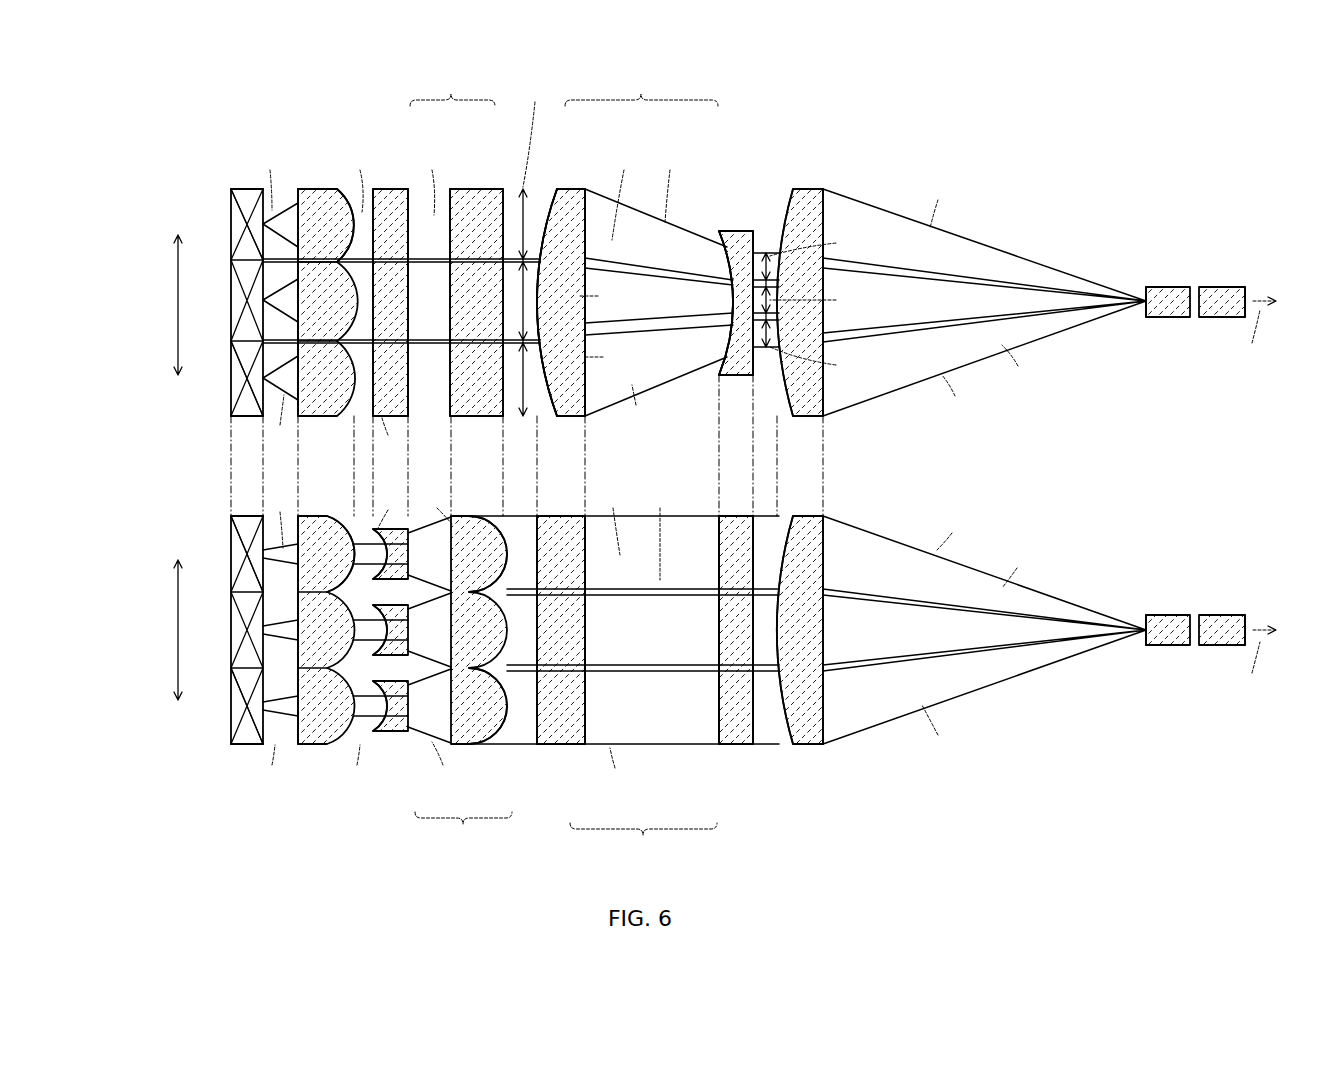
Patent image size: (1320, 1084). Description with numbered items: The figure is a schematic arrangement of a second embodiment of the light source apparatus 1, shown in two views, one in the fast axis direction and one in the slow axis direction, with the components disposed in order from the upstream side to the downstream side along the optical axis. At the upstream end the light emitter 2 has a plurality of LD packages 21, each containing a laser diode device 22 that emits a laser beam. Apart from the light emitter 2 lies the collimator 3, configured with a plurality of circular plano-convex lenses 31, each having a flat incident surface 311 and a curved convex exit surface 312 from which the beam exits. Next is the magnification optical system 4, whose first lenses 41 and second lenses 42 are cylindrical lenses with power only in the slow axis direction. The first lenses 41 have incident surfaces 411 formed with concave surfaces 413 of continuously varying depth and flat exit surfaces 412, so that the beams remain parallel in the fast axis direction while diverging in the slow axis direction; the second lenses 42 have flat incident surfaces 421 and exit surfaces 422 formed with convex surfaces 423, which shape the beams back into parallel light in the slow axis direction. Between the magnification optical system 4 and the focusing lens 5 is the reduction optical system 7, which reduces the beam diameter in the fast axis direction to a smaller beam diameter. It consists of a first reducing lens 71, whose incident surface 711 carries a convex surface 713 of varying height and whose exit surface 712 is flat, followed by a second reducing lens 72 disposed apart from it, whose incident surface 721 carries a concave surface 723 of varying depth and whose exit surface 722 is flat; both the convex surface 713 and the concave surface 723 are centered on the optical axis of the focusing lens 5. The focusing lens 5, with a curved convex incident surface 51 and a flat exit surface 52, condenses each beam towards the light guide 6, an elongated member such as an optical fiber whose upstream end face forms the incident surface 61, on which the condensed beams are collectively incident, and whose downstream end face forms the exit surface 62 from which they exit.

The light source apparatus 1 is at (1112, 142).
The light emitter 2 is at (245, 187).
The LD package 21 is at (231, 192).
The laser diode device 22 is at (237, 228).
The collimator 3 is at (315, 187).
The lens 31 is at (350, 187).
The incident surface 311 is at (298, 187).
The exit surface 312 is at (262, 260).
The magnification optical system 4 is at (452, 461).
The first lens 41 is at (402, 187).
The incident surface 411 is at (375, 187).
The exit surface 412 is at (408, 215).
The concave surface 413 is at (392, 584).
The second lens 42 is at (478, 187).
The incident surface 421 is at (452, 187).
The exit surface 422 is at (503, 187).
The convex surface 423 is at (470, 548).
The focusing lens 5 is at (808, 187).
The incident surface 51 is at (785, 205).
The exit surface 52 is at (826, 200).
The light guide 6 is at (1165, 285).
The incident surface 61 is at (1143, 290).
The exit surface 62 is at (1250, 285).
The reduction optical system 7 is at (634, 468).
The first reducing lens 71 is at (575, 187).
The incident surface 711 is at (546, 382).
The exit surface 712 is at (590, 335).
The convex surface 713 is at (547, 302).
The second reducing lens 72 is at (735, 229).
The incident surface 721 is at (730, 355).
The exit surface 722 is at (753, 382).
The concave surface 723 is at (726, 303).